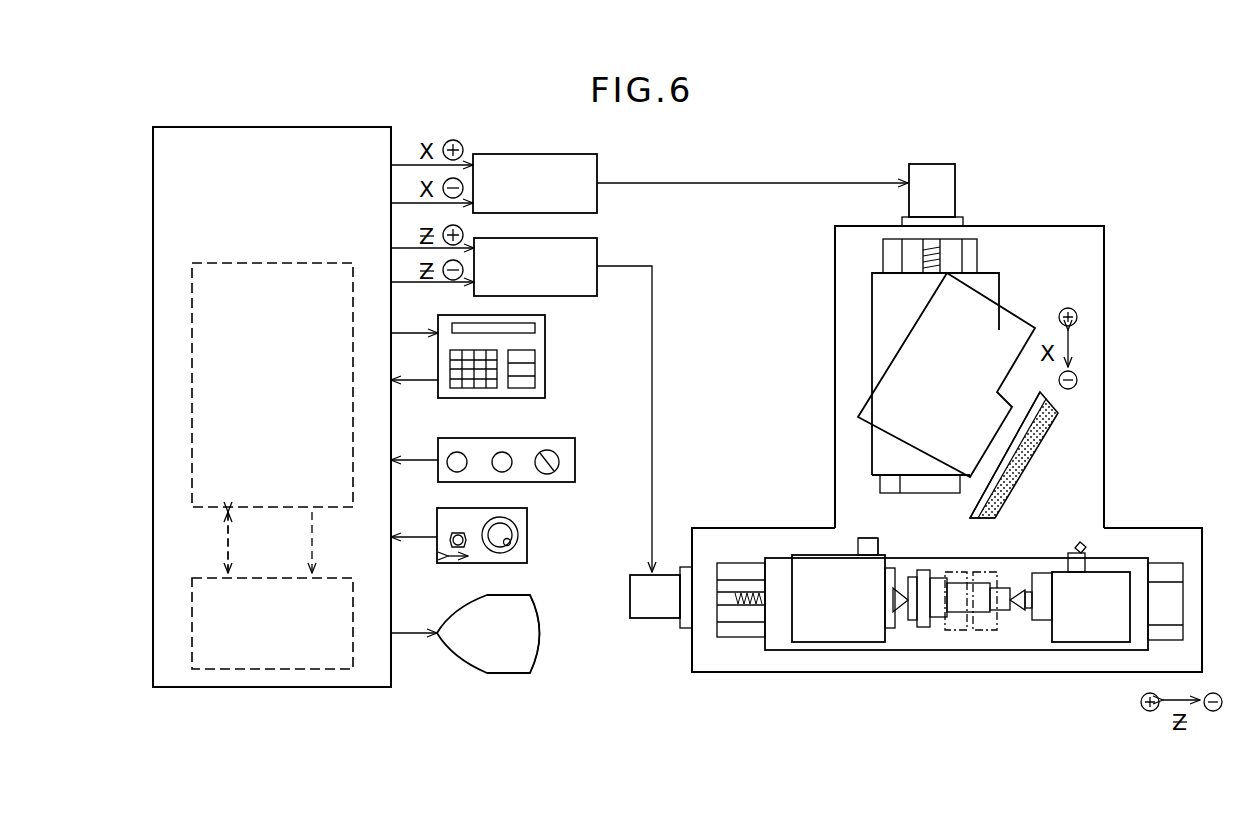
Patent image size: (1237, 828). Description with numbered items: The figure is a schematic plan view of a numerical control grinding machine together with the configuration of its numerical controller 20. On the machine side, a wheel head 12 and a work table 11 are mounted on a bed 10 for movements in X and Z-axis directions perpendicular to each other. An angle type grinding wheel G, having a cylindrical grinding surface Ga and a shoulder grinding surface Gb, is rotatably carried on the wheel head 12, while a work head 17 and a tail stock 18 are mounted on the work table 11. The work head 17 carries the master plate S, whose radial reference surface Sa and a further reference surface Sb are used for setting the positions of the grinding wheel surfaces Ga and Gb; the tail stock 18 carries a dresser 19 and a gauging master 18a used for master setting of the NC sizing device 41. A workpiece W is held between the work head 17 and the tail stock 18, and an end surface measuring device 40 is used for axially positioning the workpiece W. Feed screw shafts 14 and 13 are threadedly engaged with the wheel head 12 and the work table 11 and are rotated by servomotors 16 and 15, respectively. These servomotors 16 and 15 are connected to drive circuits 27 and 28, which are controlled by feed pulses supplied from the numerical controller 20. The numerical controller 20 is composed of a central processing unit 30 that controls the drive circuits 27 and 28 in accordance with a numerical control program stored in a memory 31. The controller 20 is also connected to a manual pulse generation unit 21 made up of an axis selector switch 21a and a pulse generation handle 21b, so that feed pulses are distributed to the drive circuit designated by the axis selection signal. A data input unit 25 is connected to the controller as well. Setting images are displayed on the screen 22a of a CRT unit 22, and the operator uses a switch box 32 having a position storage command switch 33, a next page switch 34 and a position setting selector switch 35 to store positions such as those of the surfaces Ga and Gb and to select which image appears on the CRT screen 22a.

The numerical controller 20 is at (262, 127).
The central processing unit 30 is at (192, 283).
The memory 31 is at (247, 669).
The drive circuit 27 is at (597, 166).
The drive circuit 28 is at (597, 250).
The keyboard / data input unit 25 is at (545, 343).
The switch box 32 is at (493, 461).
The position storage command switch 33 is at (457, 452).
The next page switch 34 is at (502, 452).
The position setting selector switch 35 is at (553, 452).
The manual pulse generation unit 21 is at (487, 560).
The axis selector switch 21a is at (440, 552).
The pulse generation handle 21b is at (500, 541).
The CRT unit 22 is at (485, 663).
The CRT screen 22a is at (543, 646).
The bed 10 is at (1092, 447).
The servomotor 16 is at (955, 181).
The feed screw shaft 14 is at (943, 262).
The wheel head 12 is at (885, 388).
The grinding wheel G is at (1025, 459).
The cylindrical grinding wheel surface Ga is at (985, 520).
The shoulder grinding wheel surface Gb is at (970, 507).
The master plate S is at (858, 546).
The radial reference surface Sa is at (865, 538).
The sensor contact Sb is at (878, 546).
The servomotor 15 is at (640, 618).
The feed screw shaft 13 is at (738, 605).
The work table 11 is at (895, 642).
The work head 17 is at (820, 636).
The workpiece W is at (1000, 606).
The end surface measuring device 40 is at (945, 626).
The NC sizing device 41 is at (975, 630).
The tail stock 18 is at (1105, 632).
The gauging master 18a is at (1042, 615).
The dresser 19 is at (1083, 548).